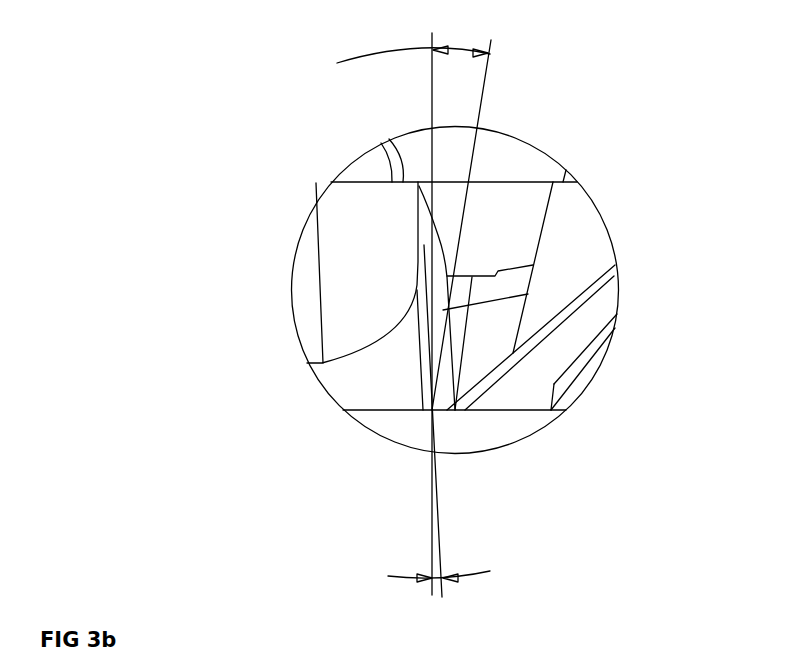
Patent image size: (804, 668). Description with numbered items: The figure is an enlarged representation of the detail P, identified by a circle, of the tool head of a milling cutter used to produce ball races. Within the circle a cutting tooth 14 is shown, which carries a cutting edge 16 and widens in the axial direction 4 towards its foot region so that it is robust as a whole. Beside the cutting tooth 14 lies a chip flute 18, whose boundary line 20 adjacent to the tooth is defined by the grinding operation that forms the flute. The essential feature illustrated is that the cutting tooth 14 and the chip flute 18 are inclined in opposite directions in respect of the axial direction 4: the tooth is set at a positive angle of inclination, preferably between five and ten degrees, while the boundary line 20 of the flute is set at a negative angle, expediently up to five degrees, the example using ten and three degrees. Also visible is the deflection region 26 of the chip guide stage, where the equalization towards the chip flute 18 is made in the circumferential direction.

The axial direction 4 is at (432, 93).
The cutting tooth 14 is at (447, 372).
The cutting edge 16 is at (438, 336).
The chip flute 18 is at (367, 231).
The boundary line 20 is at (418, 219).
The deflection region 26 is at (440, 269).
The detail P is at (237, 387).